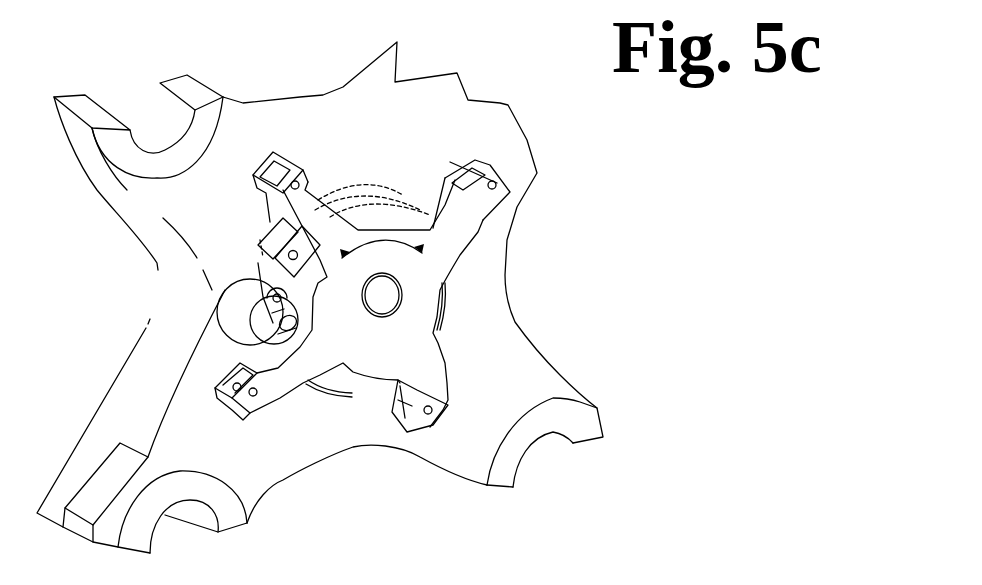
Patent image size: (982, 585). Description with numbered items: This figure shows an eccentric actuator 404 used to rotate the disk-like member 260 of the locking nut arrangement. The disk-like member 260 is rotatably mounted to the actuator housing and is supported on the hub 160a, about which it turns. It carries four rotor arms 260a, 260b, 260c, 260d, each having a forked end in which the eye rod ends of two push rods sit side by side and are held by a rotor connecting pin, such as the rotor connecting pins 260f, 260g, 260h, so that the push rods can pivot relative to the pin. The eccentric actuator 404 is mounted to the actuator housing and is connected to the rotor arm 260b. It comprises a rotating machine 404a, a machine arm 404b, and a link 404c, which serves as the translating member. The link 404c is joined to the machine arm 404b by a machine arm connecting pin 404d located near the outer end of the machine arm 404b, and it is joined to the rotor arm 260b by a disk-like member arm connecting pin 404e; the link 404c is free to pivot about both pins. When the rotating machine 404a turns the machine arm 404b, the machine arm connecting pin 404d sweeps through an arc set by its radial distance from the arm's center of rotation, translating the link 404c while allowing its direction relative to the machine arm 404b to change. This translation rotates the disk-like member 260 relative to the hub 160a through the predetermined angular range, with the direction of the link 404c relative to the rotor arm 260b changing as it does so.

The disk-like member 260 is at (392, 348).
The rotor arm 260a is at (491, 182).
The rotor arm 260b is at (274, 153).
The rotor arm 260c is at (228, 408).
The rotor arm 260d is at (403, 422).
The rotor connecting pin 260f is at (297, 184).
The rotor connecting pin 260g is at (255, 397).
The rotor connecting pin 260h is at (430, 408).
The hub 160a is at (398, 284).
The eccentric actuator 404 is at (226, 274).
The rotating machine 404a is at (210, 288).
The machine arm 404b is at (243, 328).
The link 404c is at (265, 256).
The machine arm connecting pin 404d is at (274, 302).
The disk-like member arm connecting pin 404e is at (278, 227).